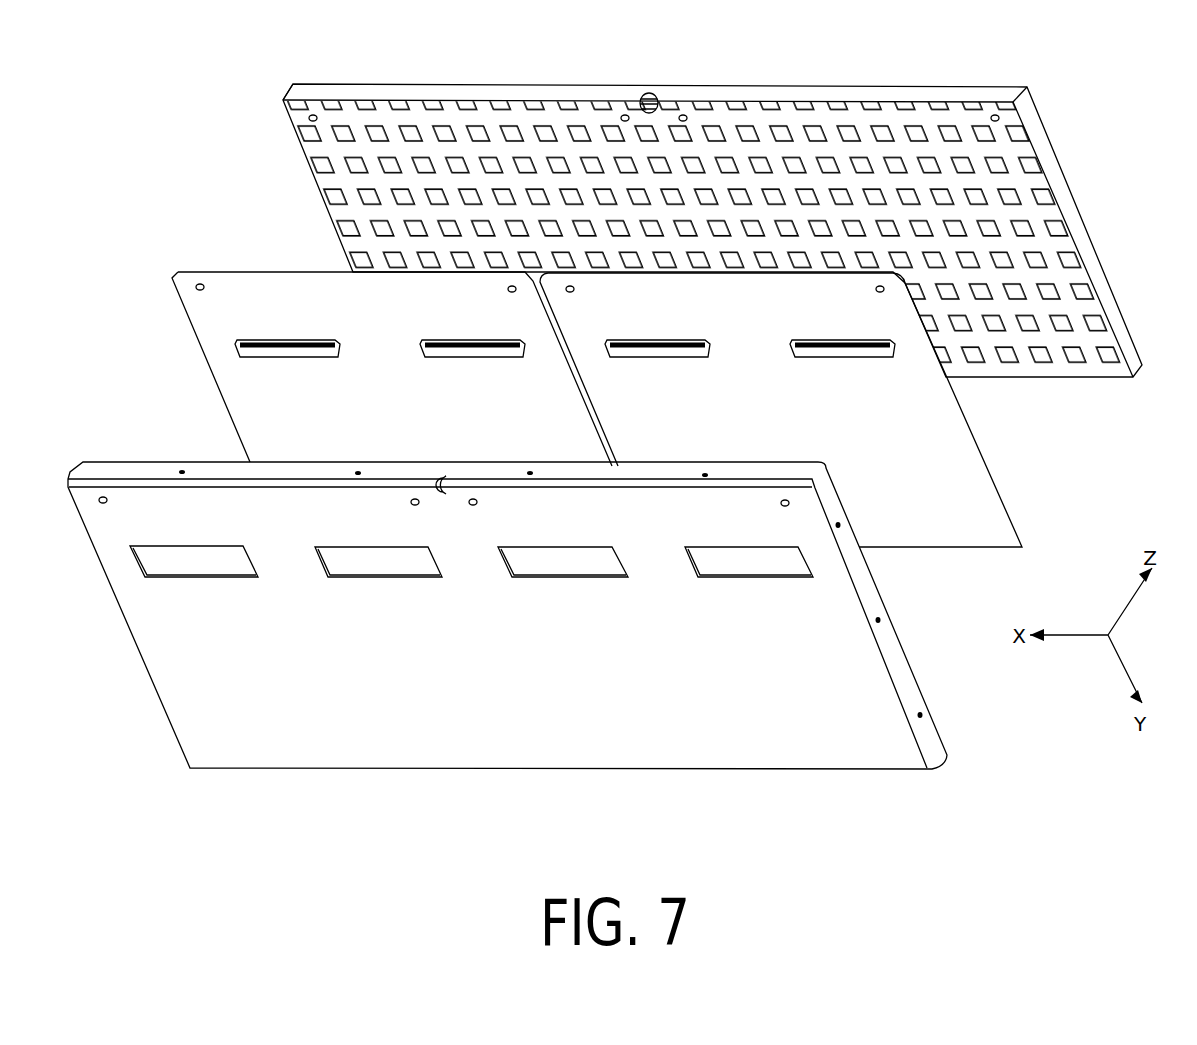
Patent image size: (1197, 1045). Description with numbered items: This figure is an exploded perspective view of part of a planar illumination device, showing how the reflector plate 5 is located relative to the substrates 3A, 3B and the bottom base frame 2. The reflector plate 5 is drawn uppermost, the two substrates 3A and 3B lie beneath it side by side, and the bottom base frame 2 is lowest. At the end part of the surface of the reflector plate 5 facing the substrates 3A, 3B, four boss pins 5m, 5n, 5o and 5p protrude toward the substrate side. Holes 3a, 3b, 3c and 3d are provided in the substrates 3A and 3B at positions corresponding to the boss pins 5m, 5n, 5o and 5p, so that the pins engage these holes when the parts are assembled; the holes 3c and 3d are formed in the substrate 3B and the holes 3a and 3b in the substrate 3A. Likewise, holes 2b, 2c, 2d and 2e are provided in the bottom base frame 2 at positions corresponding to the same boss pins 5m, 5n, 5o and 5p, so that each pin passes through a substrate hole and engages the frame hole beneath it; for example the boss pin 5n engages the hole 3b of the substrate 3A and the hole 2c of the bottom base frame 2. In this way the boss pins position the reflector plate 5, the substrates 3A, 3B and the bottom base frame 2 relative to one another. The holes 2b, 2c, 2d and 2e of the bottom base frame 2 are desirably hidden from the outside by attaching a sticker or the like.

The bottom base frame 2 is at (905, 675).
The hole 2b is at (784, 507).
The hole 2c is at (472, 506).
The hole 2d is at (413, 506).
The hole 2e is at (103, 496).
The substrate 3A is at (968, 468).
The substrate 3B is at (247, 423).
The hole 3a is at (879, 292).
The hole 3b is at (572, 293).
The hole 3c is at (513, 293).
The hole 3d is at (200, 283).
The reflector plate 5 is at (1030, 112).
The boss pin 5m is at (994, 114).
The boss pin 5n is at (683, 114).
The boss pin 5o is at (625, 114).
The boss pin 5p is at (313, 114).